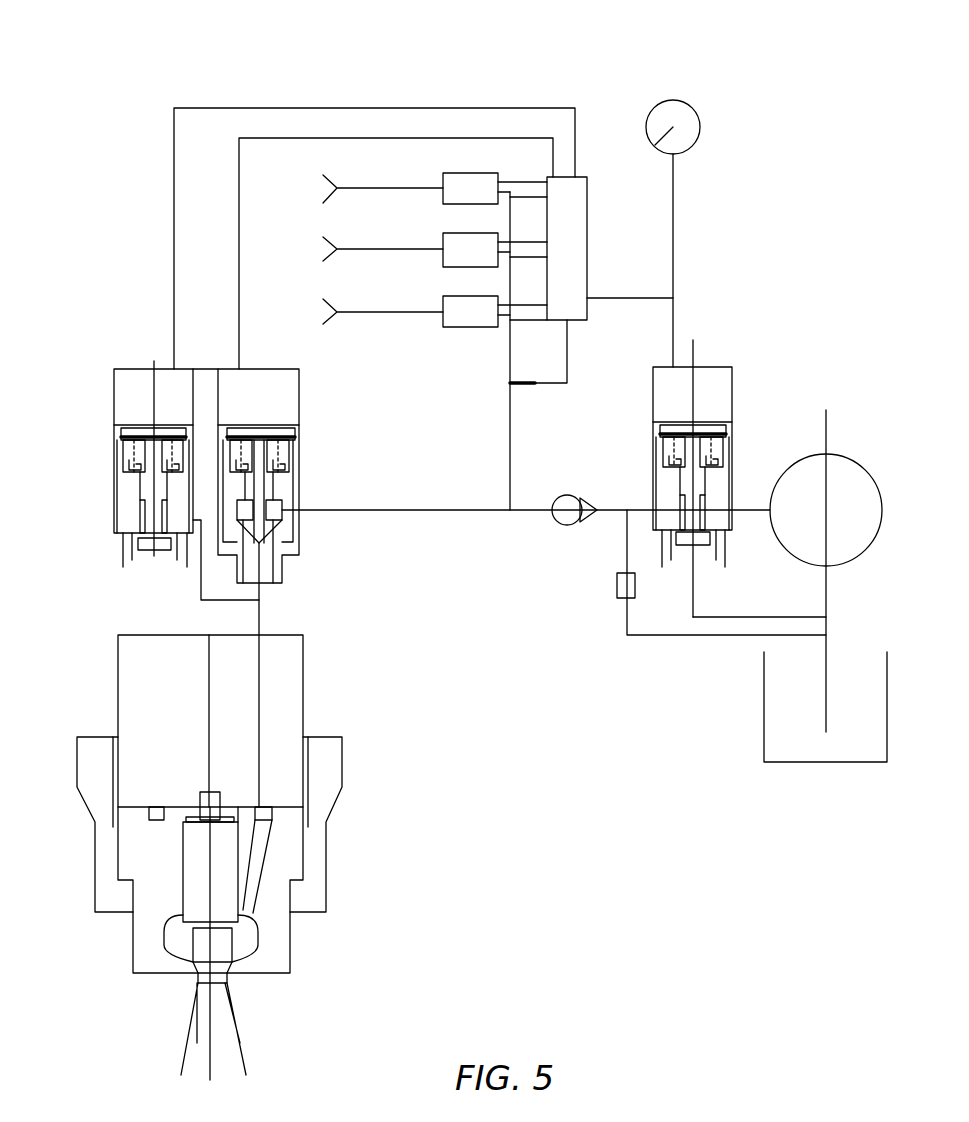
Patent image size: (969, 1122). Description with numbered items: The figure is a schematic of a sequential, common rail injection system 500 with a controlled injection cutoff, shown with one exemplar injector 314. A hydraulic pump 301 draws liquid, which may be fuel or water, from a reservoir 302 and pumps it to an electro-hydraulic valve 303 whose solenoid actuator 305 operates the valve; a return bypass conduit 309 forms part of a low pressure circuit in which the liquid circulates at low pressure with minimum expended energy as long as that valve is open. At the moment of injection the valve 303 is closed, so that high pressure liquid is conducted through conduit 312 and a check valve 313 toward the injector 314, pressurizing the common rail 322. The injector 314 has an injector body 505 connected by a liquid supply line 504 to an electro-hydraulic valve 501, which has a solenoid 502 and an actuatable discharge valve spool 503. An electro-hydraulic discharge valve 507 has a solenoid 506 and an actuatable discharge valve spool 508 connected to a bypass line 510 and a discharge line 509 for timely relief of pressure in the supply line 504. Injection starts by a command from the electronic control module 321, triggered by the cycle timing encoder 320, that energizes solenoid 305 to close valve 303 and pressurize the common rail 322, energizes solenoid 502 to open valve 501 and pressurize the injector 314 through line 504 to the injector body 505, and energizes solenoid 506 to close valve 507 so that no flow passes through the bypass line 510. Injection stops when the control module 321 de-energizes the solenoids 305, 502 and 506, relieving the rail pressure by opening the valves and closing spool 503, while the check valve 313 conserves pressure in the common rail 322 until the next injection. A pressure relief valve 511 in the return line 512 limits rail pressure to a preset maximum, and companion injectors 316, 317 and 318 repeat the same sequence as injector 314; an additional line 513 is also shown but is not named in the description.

The sequential, common rail injection system 500 is at (522, 897).
The electro-hydraulic valve 501 is at (290, 470).
The solenoid 502 is at (324, 468).
The actuatable discharge valve spool 503 is at (266, 488).
The liquid supply line 504 is at (262, 625).
The injector body 505 is at (287, 725).
The solenoid 506 is at (126, 484).
The electro-hydraulic discharge valve 507 is at (130, 498).
The actuatable discharge valve spool 508 is at (127, 487).
The discharge line 509 is at (147, 570).
The bypass line 510 is at (200, 580).
The pressure relief valve 511 is at (678, 328).
The return line 512 is at (433, 138).
The control line 513 is at (380, 108).
The hydraulic pump 301 is at (832, 567).
The reservoir 302 is at (805, 752).
The electro-hydraulic valve 303 is at (723, 490).
The solenoid actuator 305 is at (748, 478).
The return bypass conduit 309 is at (733, 617).
The conduit 312 is at (617, 510).
The check valve 313 is at (523, 387).
The injector 314 is at (261, 851).
The companion injector 316 is at (405, 311).
The companion injector 317 is at (407, 247).
The companion injector 318 is at (397, 187).
The cycle timing encoder 320 is at (692, 108).
The electronic control module 321 is at (573, 225).
The common rail 322 is at (445, 513).